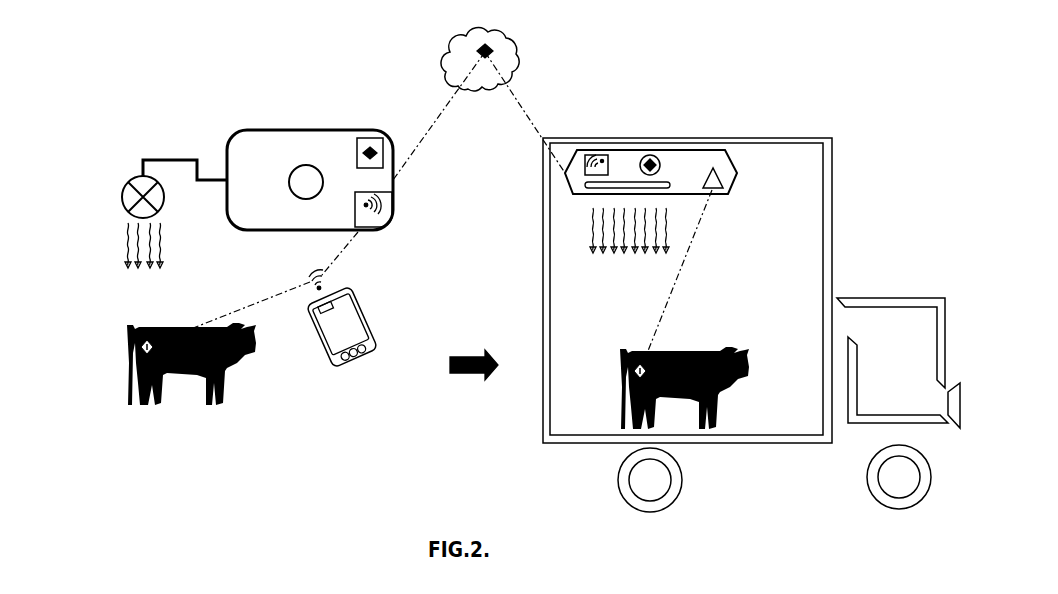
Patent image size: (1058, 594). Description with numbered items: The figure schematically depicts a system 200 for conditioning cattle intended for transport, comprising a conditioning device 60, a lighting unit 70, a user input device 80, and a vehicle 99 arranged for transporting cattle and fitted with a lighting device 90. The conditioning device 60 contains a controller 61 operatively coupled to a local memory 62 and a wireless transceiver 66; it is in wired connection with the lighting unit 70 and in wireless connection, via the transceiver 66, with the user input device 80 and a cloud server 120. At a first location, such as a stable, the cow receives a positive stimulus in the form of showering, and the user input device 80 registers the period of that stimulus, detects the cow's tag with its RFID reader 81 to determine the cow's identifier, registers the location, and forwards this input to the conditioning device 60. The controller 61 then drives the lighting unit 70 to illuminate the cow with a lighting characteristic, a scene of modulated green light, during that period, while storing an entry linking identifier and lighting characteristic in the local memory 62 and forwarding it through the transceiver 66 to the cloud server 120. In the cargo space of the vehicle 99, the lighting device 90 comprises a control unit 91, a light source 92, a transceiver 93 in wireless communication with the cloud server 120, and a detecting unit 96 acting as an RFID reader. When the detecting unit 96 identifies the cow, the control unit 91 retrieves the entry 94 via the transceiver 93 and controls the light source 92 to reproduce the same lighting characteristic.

The system 200 is at (105, 123).
The lighting unit 70 is at (116, 206).
The conditioning device 60 is at (322, 157).
The controller 61 is at (296, 168).
The local memory 62 is at (351, 166).
The wireless transceiver 66 is at (355, 212).
The cloud server 120 is at (504, 74).
The user input device 80 is at (356, 314).
The RFID reader 81 is at (326, 300).
The vehicle 99 is at (531, 260).
The lighting device 90 is at (681, 168).
The control unit 91 is at (660, 165).
The light source 92 is at (592, 190).
The transceiver 93 is at (594, 155).
The entry 94 is at (667, 144).
The detecting unit 96 is at (717, 192).